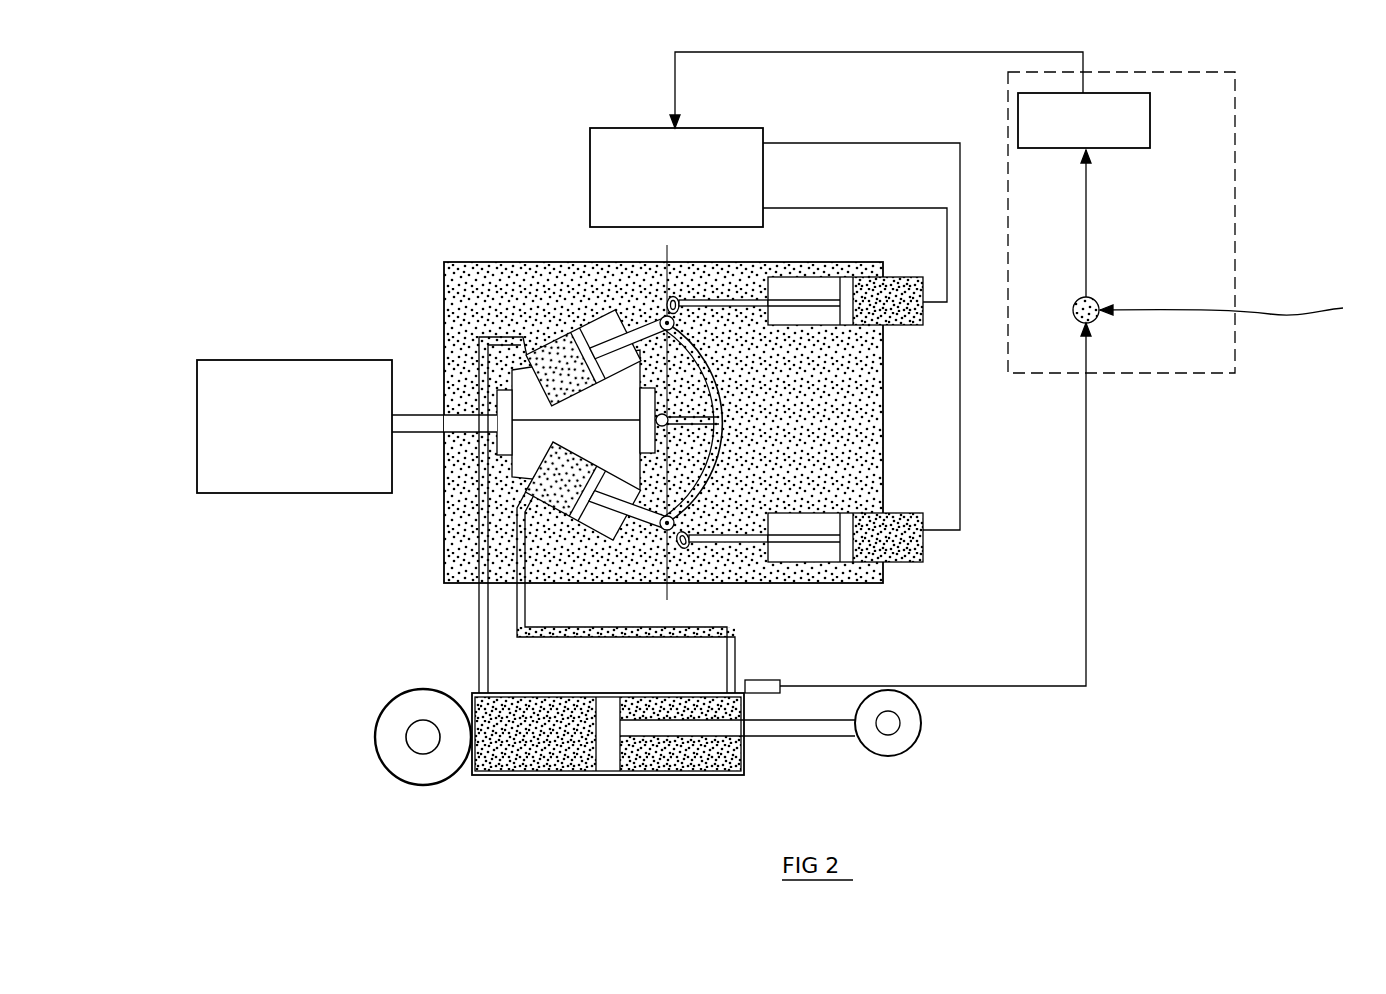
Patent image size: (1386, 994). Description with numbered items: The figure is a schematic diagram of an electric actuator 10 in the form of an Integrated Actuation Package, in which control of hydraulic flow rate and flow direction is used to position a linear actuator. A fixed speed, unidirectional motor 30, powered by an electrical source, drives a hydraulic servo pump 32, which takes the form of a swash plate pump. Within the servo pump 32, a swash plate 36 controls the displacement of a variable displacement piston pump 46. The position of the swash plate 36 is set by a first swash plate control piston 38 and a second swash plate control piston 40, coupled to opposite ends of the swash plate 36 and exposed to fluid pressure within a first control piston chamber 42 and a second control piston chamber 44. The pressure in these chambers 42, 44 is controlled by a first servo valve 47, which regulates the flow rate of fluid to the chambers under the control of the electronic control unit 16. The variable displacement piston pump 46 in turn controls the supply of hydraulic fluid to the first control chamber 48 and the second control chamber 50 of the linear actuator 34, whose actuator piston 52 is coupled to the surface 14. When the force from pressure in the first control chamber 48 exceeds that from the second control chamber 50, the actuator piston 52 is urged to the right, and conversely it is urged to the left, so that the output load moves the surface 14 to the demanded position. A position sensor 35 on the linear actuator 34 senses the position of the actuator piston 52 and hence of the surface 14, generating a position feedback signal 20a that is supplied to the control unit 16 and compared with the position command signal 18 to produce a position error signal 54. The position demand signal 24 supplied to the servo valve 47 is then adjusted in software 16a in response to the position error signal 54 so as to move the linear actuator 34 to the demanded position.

The electric actuator 10 is at (370, 166).
The surface 14 is at (921, 732).
The electronic control unit 16 is at (1240, 209).
The software 16a is at (1133, 117).
The position command signal 18 is at (1242, 309).
The position feedback signal 20a is at (1090, 627).
The position demand signal 24 is at (836, 50).
The fixed speed, unidirectional motor 30 is at (222, 478).
The hydraulic servo pump 32 is at (445, 591).
The linear actuator 34 is at (574, 780).
The position sensor 35 is at (780, 680).
The swash plate 36 is at (727, 385).
The first swash plate control piston 38 is at (847, 288).
The second swash plate control piston 40 is at (848, 572).
The first control piston chamber 42 is at (900, 318).
The second control piston chamber 44 is at (922, 548).
The variable displacement piston pump 46 is at (572, 335).
The first servo valve 47 is at (603, 173).
The first control chamber 48 is at (537, 760).
The second control chamber 50 is at (675, 752).
The actuator piston 52 is at (802, 736).
The position error signal 54 is at (1087, 262).